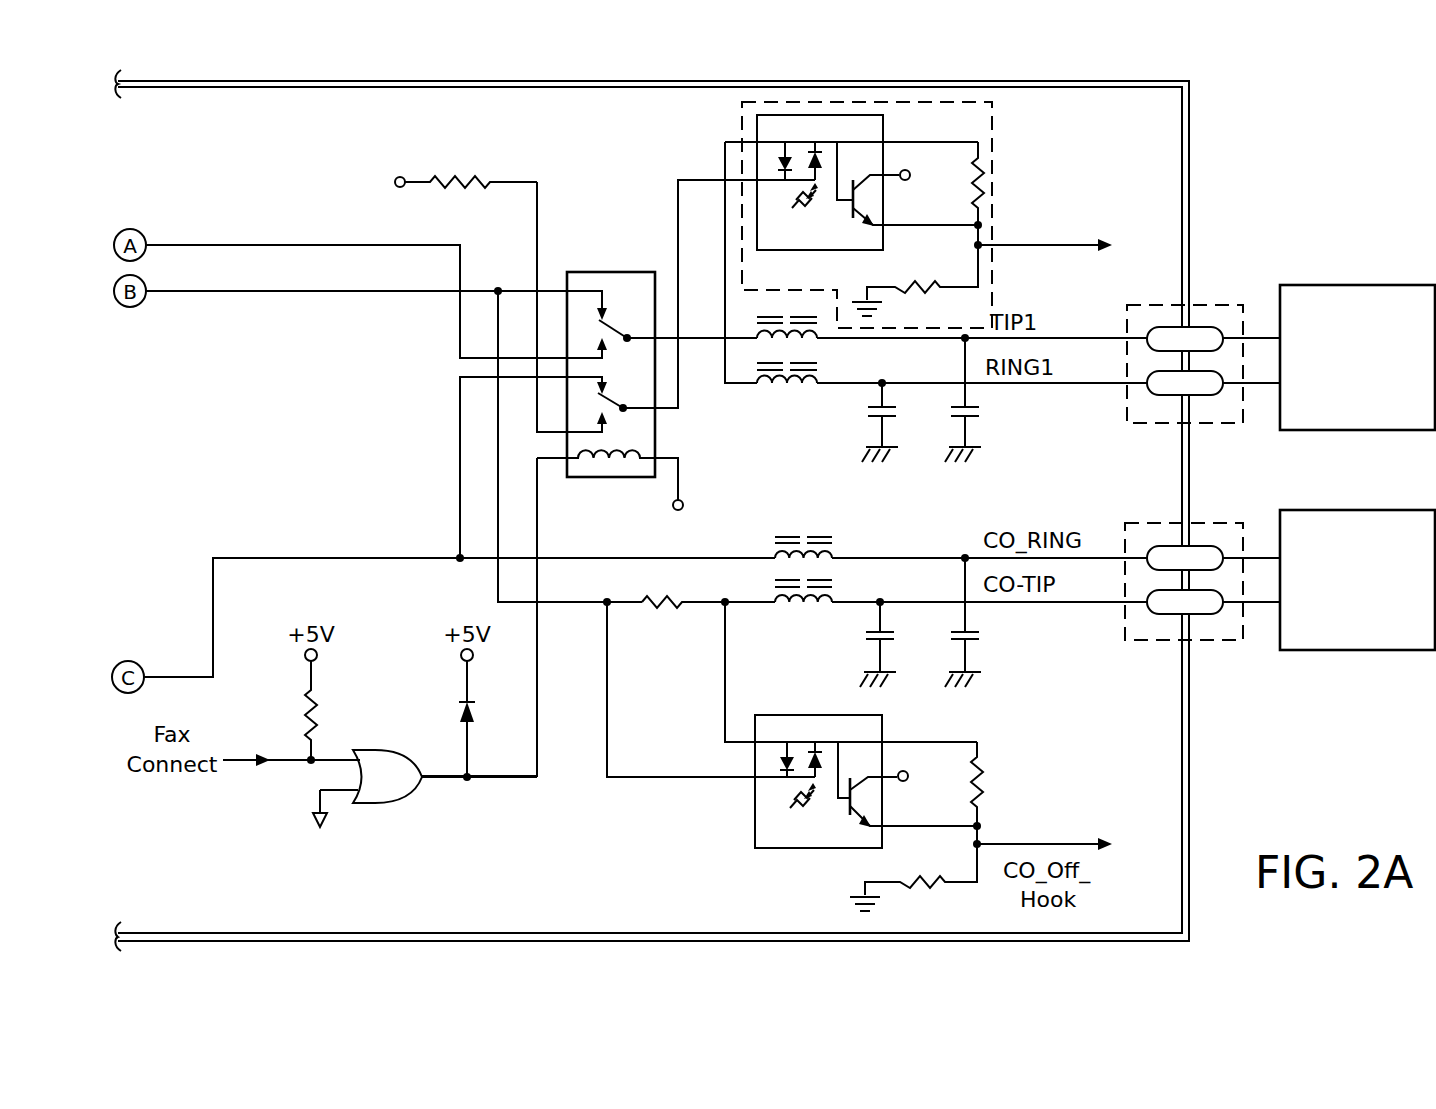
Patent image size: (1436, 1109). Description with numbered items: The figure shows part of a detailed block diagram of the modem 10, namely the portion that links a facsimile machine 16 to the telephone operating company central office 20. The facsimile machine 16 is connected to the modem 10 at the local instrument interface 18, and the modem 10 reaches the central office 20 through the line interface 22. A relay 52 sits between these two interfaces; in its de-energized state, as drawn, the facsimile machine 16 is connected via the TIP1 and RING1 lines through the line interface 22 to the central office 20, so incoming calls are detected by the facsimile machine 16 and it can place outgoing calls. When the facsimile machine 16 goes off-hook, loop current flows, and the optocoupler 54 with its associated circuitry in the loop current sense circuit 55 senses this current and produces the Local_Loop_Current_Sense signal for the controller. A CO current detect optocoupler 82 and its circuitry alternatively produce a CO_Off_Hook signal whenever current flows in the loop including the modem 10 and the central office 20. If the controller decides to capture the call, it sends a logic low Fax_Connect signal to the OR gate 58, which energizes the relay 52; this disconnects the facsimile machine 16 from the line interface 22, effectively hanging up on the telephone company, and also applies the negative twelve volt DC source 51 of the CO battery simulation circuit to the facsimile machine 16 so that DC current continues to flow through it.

The modem 10 is at (620, 138).
The facsimile machine 16 is at (1330, 285).
The local instrument interface 18 is at (1210, 303).
The central office 20 is at (1326, 510).
The line interface 22 is at (1213, 522).
The -12 VDC source 51 is at (395, 160).
The relay 52 is at (617, 272).
The optocoupler 54 is at (883, 242).
The loop current sense circuit 55 is at (741, 103).
The OR gate 58 is at (380, 750).
The CO current detect optocoupler 82 is at (752, 823).